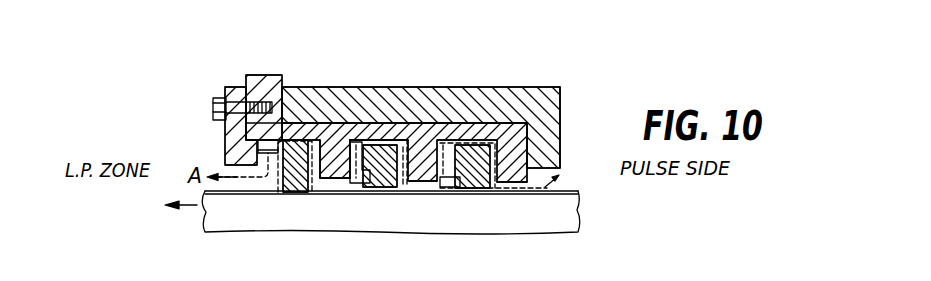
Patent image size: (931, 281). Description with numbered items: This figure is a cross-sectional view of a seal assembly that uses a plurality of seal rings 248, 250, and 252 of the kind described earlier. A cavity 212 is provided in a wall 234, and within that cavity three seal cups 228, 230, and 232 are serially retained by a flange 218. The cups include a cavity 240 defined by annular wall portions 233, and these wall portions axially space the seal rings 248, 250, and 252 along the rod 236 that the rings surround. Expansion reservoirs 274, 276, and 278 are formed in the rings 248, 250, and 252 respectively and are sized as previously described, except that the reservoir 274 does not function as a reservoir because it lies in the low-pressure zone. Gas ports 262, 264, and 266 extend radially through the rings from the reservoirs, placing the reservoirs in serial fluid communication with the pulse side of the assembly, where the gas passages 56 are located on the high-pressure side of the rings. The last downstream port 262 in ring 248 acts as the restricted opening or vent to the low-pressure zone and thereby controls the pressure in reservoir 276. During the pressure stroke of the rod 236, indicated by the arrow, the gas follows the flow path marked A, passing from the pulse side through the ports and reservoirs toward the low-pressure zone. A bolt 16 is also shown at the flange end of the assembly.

The bolt 16 is at (213, 103).
The seal cup 228 is at (280, 78).
The cavity 240 is at (318, 122).
The cavity 212 is at (327, 126).
The gas port 264 is at (392, 130).
The seal cup 230 is at (389, 137).
The gas port 266 is at (488, 130).
The seal cup 232 is at (527, 90).
The wall 234 is at (560, 95).
The flange 218 is at (225, 128).
The gas port 262 is at (258, 146).
The annular wall portions 233 is at (513, 170).
The expansion reservoir 274 is at (268, 182).
The seal ring 248 is at (290, 187).
The expansion reservoir 276 is at (360, 187).
The seal ring 250 is at (384, 189).
The expansion reservoir 278 is at (458, 187).
The gas passages 56 is at (493, 189).
The seal ring 252 is at (491, 190).
The rod 236 is at (580, 222).